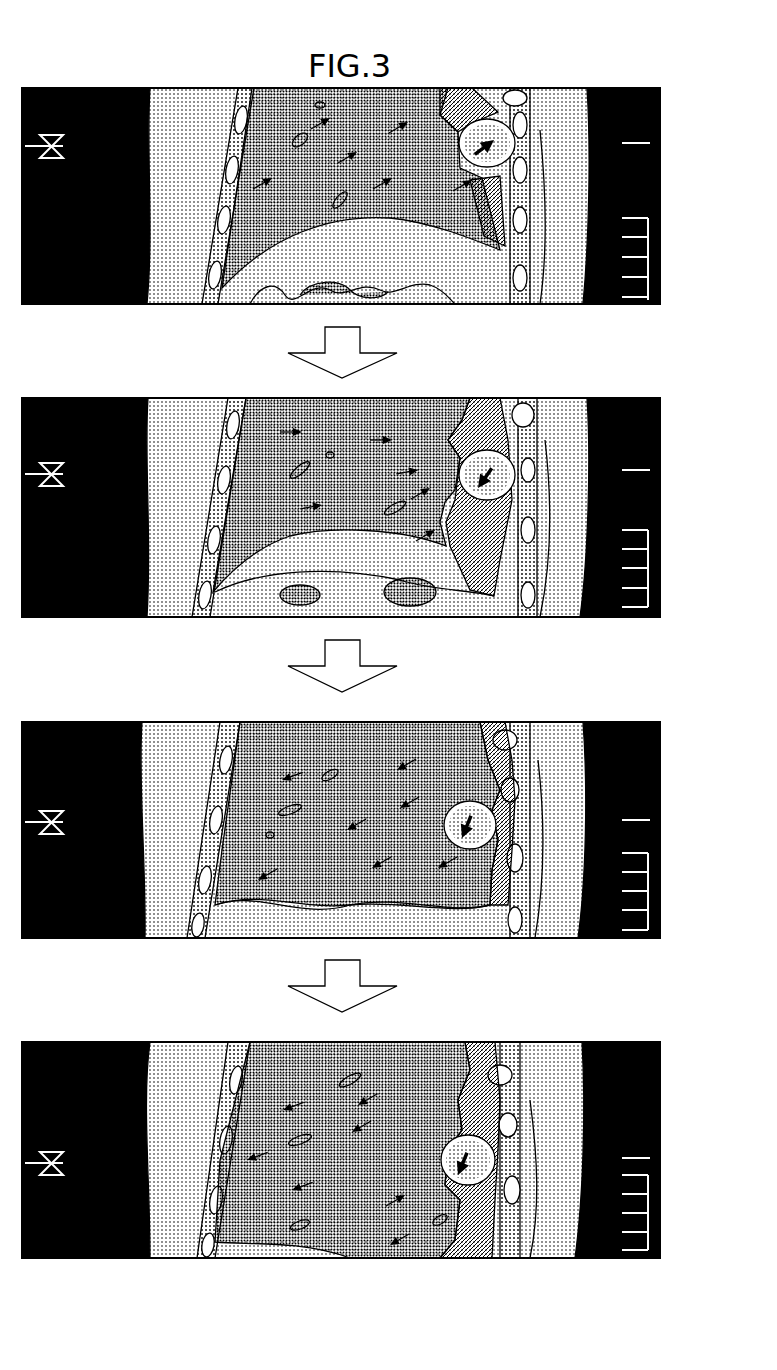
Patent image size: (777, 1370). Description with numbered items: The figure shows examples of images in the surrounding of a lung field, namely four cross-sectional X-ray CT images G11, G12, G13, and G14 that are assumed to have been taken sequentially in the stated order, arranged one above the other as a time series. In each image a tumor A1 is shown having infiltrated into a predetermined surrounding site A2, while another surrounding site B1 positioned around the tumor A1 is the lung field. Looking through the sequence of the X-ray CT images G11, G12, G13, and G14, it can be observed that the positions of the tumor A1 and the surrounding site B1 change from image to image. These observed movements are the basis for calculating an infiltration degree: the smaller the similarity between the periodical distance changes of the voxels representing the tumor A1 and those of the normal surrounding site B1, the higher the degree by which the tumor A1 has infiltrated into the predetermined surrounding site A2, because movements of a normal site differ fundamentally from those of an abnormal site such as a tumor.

The X-ray CT image G11 is at (662, 100).
The X-ray CT image G12 is at (662, 410).
The X-ray CT image G13 is at (662, 735).
The X-ray CT image G14 is at (662, 1055).
The tumor A1 is at (490, 152).
The predetermined surrounding site A2 is at (440, 128).
The surrounding site B1 is at (450, 215).